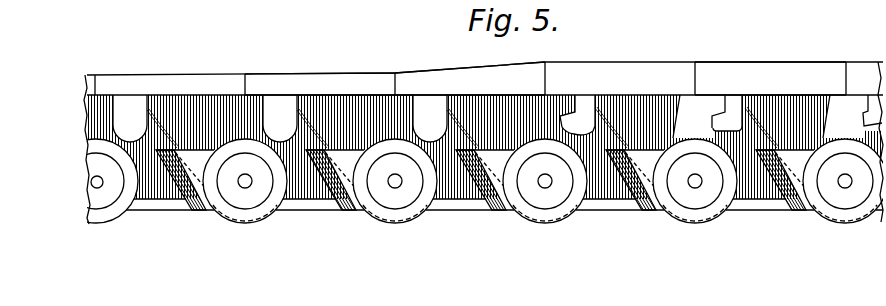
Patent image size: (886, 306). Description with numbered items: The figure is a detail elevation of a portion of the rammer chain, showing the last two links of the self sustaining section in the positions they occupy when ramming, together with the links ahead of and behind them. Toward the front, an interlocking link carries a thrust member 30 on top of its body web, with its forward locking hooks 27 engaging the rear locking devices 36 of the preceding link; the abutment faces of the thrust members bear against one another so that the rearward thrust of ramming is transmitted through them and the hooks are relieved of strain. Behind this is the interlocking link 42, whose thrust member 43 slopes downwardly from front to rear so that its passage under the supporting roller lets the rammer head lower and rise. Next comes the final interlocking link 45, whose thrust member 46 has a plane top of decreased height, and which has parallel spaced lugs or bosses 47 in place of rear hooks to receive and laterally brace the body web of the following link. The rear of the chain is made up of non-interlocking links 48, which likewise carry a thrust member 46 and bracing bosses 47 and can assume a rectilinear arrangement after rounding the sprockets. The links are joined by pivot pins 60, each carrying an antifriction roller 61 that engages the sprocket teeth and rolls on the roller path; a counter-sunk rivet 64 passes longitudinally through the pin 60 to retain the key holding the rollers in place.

The locking hooks 27 is at (703, 108).
The thrust member 30 is at (770, 68).
The locking devices 36 is at (578, 120).
The interlocking link 42 is at (600, 210).
The thrust member 43 is at (440, 72).
The final interlocking link 45 is at (460, 210).
The thrust member 46 is at (328, 80).
The lugs or bosses 47 is at (127, 104).
The links 48 is at (167, 210).
The pivot pin 60 is at (93, 167).
The antifriction roller 61 is at (237, 215).
The counter-sunk rivet 64 is at (697, 176).